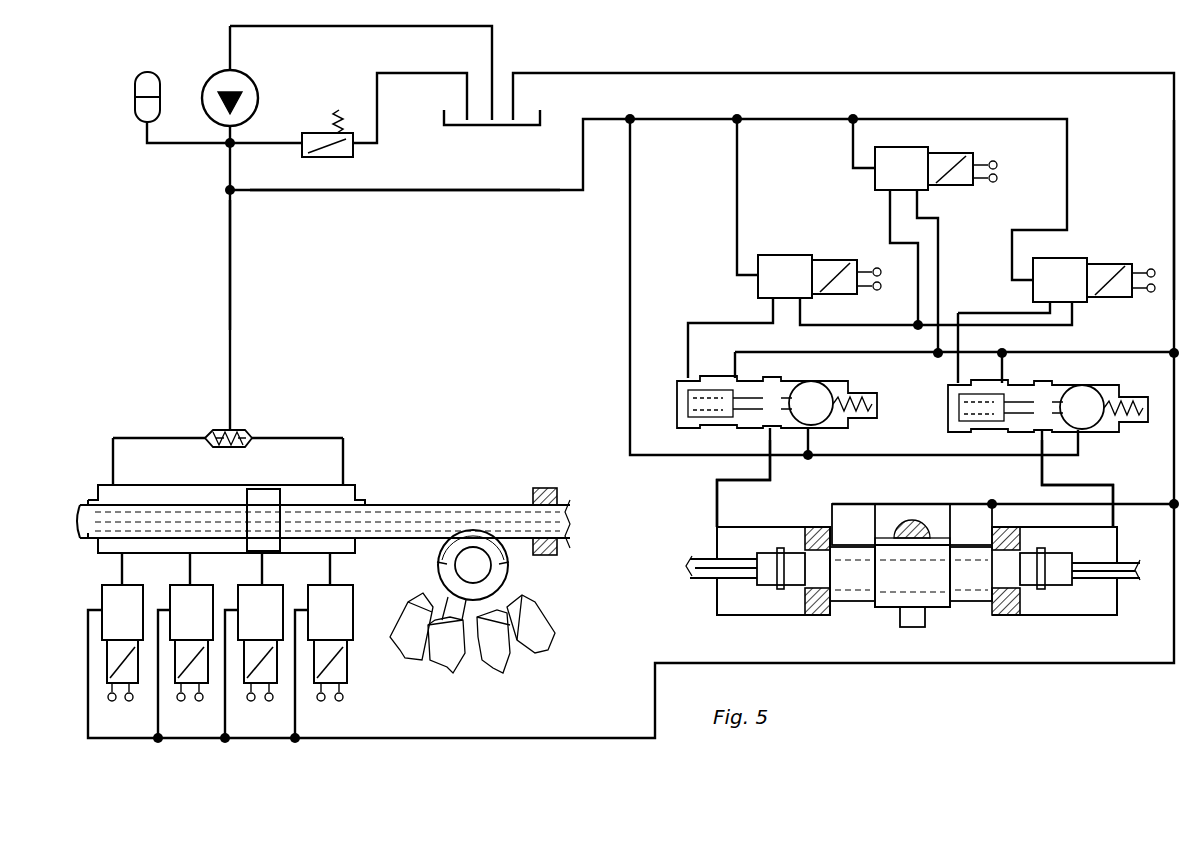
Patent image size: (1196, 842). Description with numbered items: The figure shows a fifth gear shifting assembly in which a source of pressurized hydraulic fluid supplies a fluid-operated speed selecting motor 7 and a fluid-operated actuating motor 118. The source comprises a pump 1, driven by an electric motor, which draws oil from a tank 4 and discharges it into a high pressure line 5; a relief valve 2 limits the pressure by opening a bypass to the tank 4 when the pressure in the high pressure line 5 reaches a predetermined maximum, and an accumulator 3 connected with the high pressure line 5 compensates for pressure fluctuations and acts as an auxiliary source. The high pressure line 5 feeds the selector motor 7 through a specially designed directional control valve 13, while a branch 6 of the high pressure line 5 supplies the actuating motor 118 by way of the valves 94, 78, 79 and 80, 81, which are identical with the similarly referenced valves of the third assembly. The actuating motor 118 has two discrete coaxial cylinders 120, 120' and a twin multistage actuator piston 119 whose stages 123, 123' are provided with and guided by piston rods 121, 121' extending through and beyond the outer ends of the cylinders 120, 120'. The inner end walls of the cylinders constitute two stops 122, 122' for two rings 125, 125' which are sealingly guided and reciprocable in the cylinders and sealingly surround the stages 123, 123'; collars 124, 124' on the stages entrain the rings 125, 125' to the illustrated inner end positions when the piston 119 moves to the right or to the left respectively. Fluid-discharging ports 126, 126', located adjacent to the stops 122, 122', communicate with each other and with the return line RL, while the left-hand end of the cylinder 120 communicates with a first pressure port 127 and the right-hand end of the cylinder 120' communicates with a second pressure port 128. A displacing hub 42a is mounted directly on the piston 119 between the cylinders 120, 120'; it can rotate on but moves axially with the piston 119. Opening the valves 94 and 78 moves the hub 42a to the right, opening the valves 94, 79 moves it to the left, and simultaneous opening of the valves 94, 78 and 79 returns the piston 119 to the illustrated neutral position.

The pump 1 is at (248, 84).
The relief valve 2 is at (300, 133).
The accumulator 3 is at (137, 84).
The tank 4 is at (458, 127).
The high pressure line 5 is at (232, 266).
The branch of the high pressure line 6 is at (393, 192).
The speed selecting motor 7 is at (402, 465).
The directional control valve 13 is at (240, 430).
The displacing hub 42a is at (493, 578).
The valve 78 is at (782, 262).
The valve 79 is at (1064, 265).
The valve 80 is at (795, 378).
The valve 81 is at (1083, 382).
The valve 94 is at (912, 152).
The return line RL is at (1172, 194).
The actuating motor 118 is at (895, 579).
The actuator piston 119 is at (955, 590).
The cylinder 120 is at (756, 590).
The cylinder 120' is at (1067, 591).
The piston rod 121 is at (708, 556).
The piston rod 121' is at (1123, 554).
The stop 122 is at (865, 600).
The stop 122' is at (977, 600).
The piston stage 123 is at (767, 559).
The piston stage 123' is at (1049, 548).
The collar 124 is at (781, 600).
The collar 124' is at (1064, 600).
The ring 125 is at (830, 590).
The ring 125' is at (1023, 590).
The fluid-discharging port 126 is at (856, 524).
The fluid-discharging port 126' is at (970, 524).
The first pressure port 127 is at (716, 494).
The second pressure port 128 is at (1112, 496).